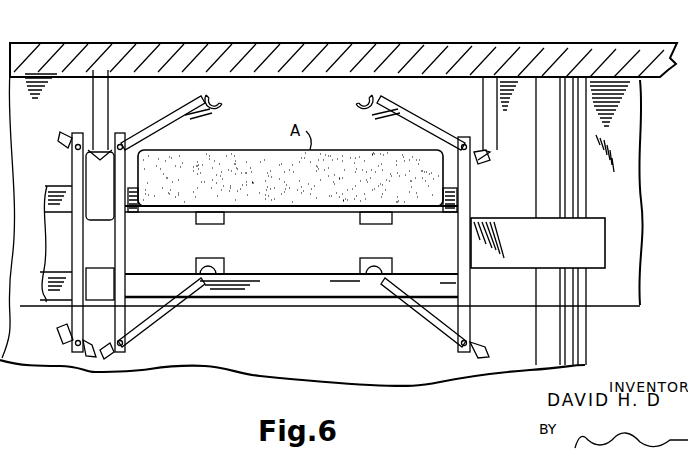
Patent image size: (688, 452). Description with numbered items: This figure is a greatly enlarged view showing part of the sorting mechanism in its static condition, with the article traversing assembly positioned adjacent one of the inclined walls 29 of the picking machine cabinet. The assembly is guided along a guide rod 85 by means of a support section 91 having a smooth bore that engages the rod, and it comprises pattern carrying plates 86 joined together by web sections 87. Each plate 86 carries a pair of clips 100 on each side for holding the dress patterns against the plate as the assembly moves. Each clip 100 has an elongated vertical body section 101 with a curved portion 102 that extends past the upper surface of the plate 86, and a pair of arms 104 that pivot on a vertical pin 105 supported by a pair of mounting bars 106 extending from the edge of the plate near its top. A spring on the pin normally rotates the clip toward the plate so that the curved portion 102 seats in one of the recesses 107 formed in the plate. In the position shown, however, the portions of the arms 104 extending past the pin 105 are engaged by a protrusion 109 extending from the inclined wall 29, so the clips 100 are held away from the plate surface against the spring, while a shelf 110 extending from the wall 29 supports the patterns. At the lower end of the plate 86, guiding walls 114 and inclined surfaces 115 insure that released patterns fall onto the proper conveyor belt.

The inclined wall 29 is at (506, 62).
The guide rod 85 is at (565, 134).
The pattern carrying plate 86 is at (54, 240).
The web section 87 is at (98, 247).
The support section 91 is at (570, 255).
The clip 100 is at (200, 118).
The elongated vertical body section 101 is at (197, 98).
The curved portion 102 is at (224, 102).
The arm 104 is at (160, 126).
The vertical pin 105 is at (120, 136).
The mounting bar 106 is at (118, 175).
The recess 107 is at (198, 226).
The protrusion 109 is at (98, 106).
The shelf 110 is at (622, 143).
The guiding wall 114 is at (462, 206).
The inclined surface 115 is at (255, 299).